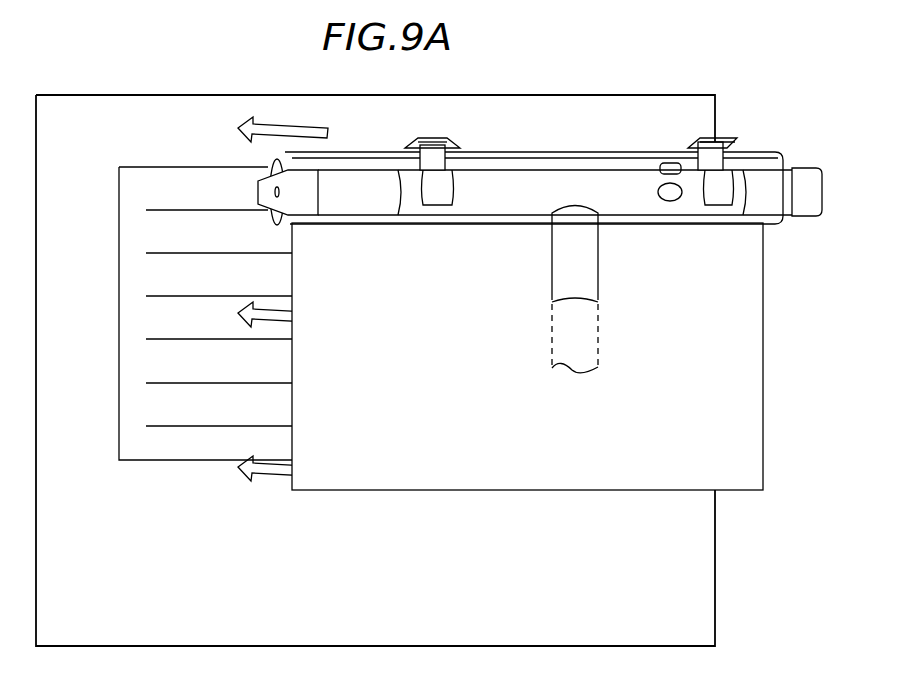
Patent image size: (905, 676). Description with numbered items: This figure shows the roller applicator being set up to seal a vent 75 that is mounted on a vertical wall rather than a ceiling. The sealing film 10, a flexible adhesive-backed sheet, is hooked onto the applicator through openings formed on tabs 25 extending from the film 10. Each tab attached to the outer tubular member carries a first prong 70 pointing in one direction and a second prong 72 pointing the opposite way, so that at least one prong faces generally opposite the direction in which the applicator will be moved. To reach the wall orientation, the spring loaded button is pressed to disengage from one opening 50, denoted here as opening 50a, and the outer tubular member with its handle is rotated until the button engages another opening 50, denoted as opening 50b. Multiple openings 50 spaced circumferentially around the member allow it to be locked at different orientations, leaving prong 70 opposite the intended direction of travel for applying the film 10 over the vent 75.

The sealing film 10 is at (720, 348).
The tabs 25 is at (450, 150).
The opening 50 is at (604, 179).
The opening 50a is at (672, 204).
The opening 50b is at (660, 171).
The first prong 70 is at (407, 152).
The second prong 72 is at (717, 197).
The vent 75 is at (147, 185).